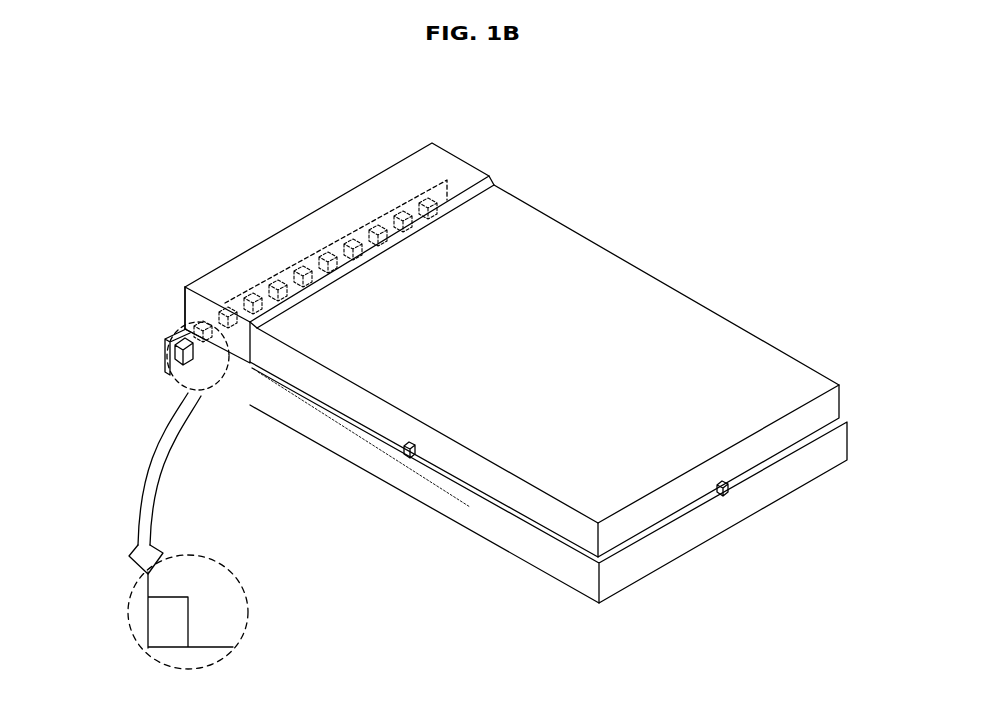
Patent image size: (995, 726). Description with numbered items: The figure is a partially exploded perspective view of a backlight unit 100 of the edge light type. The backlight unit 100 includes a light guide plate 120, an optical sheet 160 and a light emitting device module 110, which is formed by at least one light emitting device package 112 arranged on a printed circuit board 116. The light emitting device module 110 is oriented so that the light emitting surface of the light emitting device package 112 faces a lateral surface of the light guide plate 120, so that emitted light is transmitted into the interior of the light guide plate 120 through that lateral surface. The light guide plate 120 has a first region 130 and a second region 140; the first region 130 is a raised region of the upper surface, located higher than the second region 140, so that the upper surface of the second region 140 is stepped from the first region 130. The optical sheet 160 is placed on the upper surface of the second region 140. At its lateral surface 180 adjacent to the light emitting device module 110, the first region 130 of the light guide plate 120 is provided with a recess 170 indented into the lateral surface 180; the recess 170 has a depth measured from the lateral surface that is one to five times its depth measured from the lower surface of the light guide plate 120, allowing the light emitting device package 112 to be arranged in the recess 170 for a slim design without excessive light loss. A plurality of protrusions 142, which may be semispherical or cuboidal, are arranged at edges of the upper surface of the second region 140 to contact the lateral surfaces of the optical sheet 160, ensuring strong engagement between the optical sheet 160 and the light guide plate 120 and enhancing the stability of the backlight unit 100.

The backlight unit 100 is at (76, 141).
The light emitting device module 110 is at (113, 370).
The light emitting device package 112 is at (178, 362).
The printed circuit board 116 is at (167, 352).
The light guide plate 120 is at (585, 578).
The first region 130 is at (212, 330).
The second region 140 is at (419, 481).
The protrusions 142 is at (727, 494).
The optical sheet 160 is at (668, 317).
The recess 170 is at (188, 335).
The lateral surface 180 is at (186, 328).